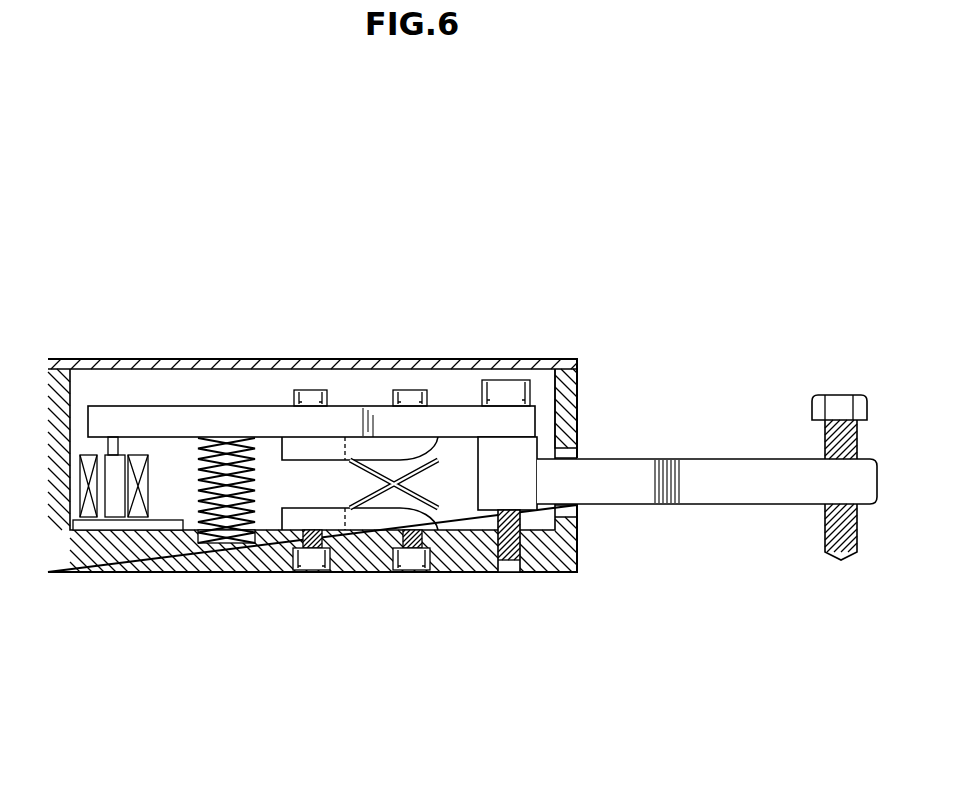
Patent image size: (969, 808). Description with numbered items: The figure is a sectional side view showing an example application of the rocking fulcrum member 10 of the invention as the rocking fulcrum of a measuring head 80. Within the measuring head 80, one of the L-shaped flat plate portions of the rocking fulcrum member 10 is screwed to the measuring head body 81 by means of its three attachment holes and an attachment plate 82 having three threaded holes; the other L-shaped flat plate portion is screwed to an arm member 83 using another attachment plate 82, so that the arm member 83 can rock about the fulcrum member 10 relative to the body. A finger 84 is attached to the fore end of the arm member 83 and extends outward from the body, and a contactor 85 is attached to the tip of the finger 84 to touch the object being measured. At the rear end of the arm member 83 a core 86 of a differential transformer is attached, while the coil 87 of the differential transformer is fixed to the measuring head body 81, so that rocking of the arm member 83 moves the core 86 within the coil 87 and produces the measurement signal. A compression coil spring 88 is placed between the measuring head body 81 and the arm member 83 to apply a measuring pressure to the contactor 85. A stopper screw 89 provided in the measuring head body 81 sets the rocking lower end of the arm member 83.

The measuring head 80 is at (614, 220).
The measuring head body 81 is at (127, 560).
The attachment plate 82 is at (295, 450).
The arm member 83 is at (165, 417).
The finger 84 is at (715, 470).
The contactor 85 is at (830, 530).
The core 86 is at (112, 465).
The coil 87 is at (90, 510).
The compression coil spring 88 is at (213, 452).
The screw 89 is at (497, 540).
The rocking fulcrum member 10 is at (444, 450).